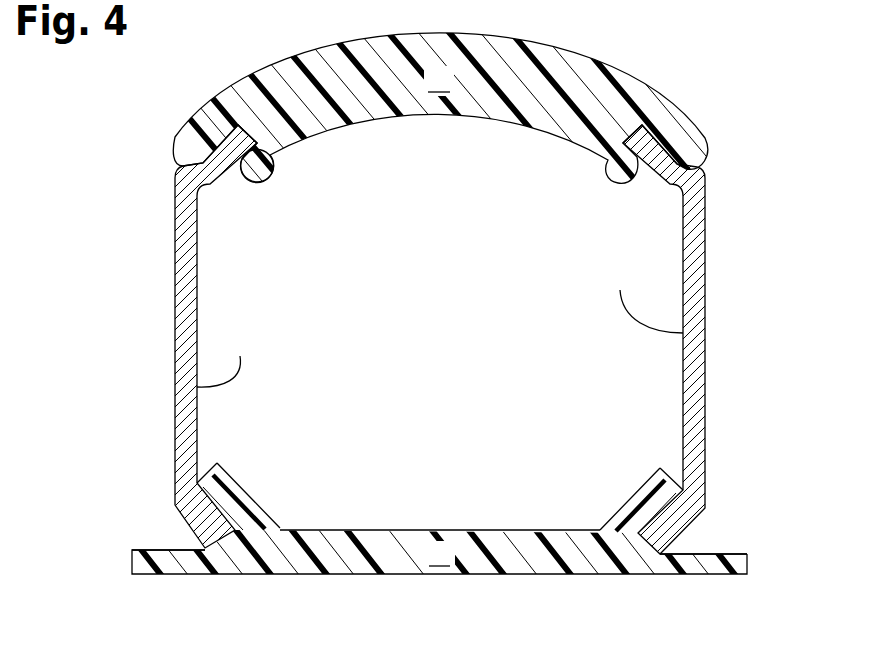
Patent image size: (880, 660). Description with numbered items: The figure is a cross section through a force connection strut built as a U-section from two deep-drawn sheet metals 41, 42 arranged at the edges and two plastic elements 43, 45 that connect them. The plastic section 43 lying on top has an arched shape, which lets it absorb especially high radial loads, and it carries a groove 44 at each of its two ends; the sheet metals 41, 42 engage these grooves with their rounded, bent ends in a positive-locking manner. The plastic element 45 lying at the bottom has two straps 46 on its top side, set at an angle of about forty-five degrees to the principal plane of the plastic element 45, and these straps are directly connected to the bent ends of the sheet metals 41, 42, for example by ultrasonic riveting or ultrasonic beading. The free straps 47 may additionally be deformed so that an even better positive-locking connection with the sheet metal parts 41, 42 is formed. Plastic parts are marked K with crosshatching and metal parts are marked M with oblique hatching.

The deep-drawn sheet metal 41 is at (175, 305).
The deep-drawn sheet metal 42 is at (707, 308).
The plastic section 43 is at (560, 44).
The groove 44 is at (262, 170).
The plastic element 45 is at (527, 577).
The strap 46 is at (224, 470).
The free strap 47 is at (157, 550).